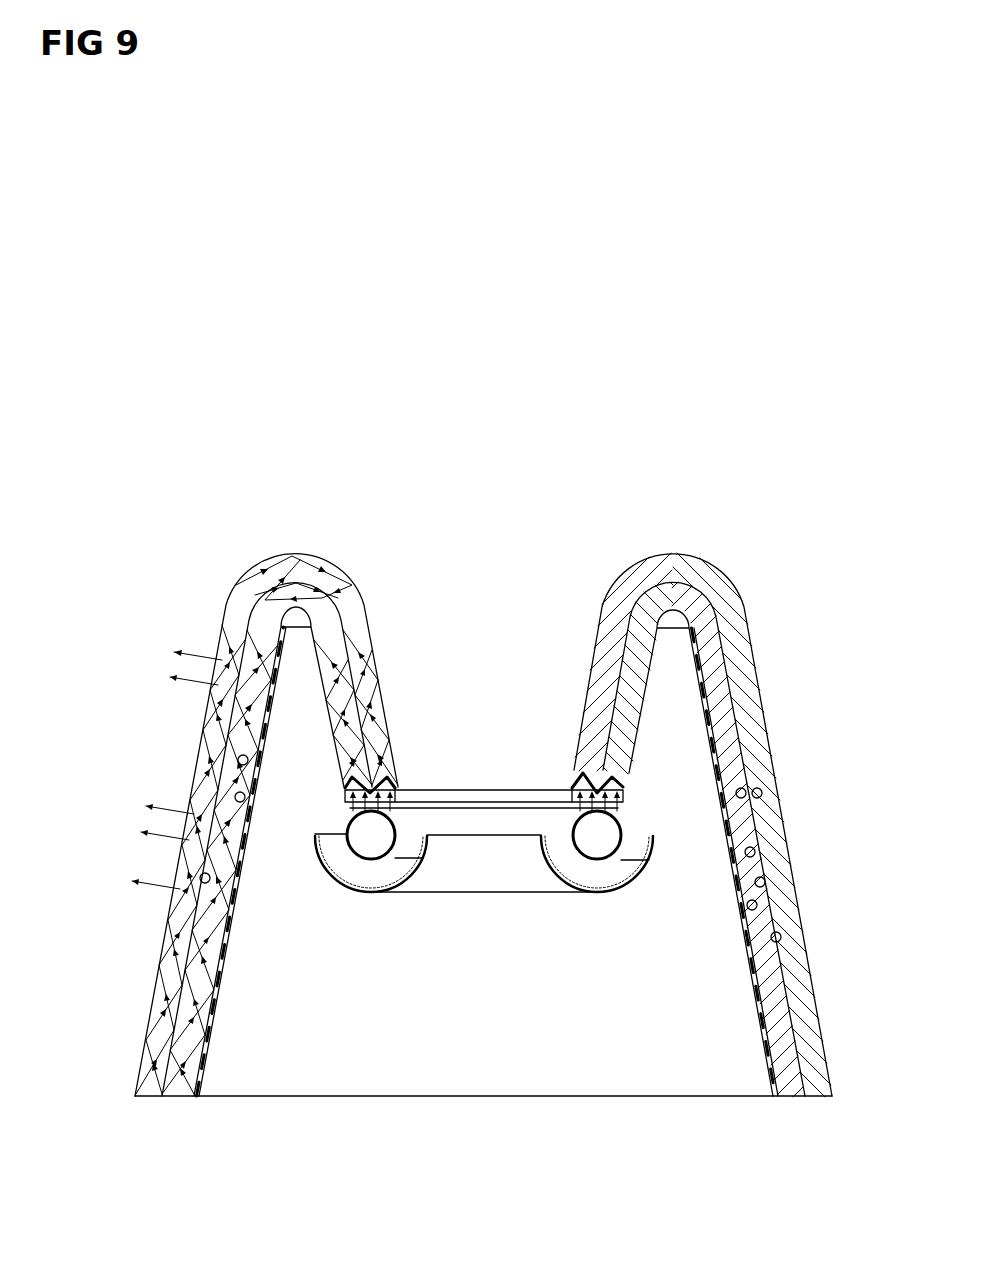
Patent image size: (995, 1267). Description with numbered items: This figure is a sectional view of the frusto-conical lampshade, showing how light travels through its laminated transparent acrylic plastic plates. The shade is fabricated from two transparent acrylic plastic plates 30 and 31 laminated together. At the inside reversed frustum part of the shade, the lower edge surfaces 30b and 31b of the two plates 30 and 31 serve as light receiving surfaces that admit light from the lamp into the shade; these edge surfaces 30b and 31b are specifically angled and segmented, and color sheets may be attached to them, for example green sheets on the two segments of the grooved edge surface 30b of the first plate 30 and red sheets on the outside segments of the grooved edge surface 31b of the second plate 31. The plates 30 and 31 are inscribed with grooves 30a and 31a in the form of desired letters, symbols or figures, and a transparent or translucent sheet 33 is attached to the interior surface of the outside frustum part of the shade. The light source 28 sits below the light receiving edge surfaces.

The light emitting diode package 28 is at (642, 878).
The first transparent acrylic plastic plate 30 is at (817, 1078).
The grooves of the first plastic plate 30a is at (240, 814).
The lower edge surface of the first plastic plate 30b is at (575, 788).
The second transparent acrylic plastic plate 31 is at (780, 1035).
The grooves of the second plastic plate 31a is at (232, 878).
The lower edge surface of the second plastic plate 31b is at (625, 768).
The transparent or translucent sheet 33 is at (206, 1042).